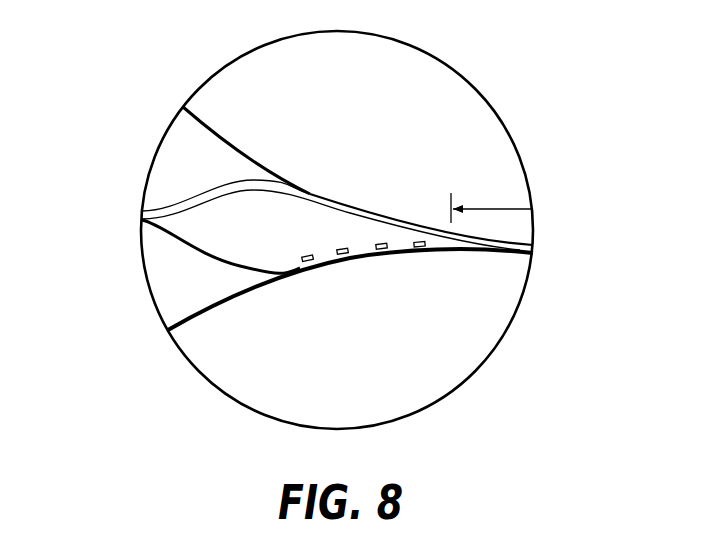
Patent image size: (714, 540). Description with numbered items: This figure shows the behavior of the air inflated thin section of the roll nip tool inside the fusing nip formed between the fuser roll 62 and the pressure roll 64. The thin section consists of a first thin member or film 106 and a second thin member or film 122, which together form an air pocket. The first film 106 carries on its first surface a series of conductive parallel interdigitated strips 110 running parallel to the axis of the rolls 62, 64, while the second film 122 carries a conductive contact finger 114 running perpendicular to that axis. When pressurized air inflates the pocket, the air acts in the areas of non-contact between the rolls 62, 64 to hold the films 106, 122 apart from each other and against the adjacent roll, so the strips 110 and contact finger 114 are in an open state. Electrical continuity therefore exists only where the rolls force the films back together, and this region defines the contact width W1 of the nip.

The fuser roll 62 is at (378, 119).
The pressure roll 64 is at (381, 362).
The first thin member or film 106 is at (185, 246).
The conductive parallel interdigitated strips 110 is at (346, 248).
The conductive contact finger 114 is at (290, 201).
The second thin member or film 122 is at (205, 184).
The contact width W1 is at (503, 209).